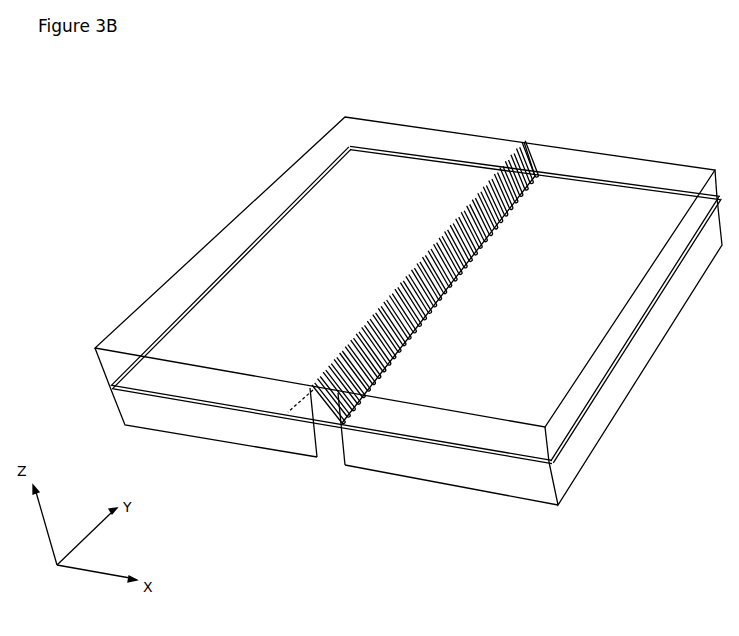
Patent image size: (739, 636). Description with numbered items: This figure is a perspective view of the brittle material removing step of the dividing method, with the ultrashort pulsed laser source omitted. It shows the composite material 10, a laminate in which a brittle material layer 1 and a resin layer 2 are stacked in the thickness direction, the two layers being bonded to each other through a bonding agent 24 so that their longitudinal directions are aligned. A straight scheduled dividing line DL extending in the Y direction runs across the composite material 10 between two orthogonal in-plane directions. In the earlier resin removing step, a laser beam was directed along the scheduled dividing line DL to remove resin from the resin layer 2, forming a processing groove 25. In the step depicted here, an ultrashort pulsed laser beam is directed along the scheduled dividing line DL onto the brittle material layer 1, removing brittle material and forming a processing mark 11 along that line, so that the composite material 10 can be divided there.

The composite material 10 is at (165, 205).
The brittle material layer 1 is at (593, 373).
The resin layer 2 is at (600, 406).
The bonding agent 24 is at (572, 438).
The processing mark 11 is at (325, 371).
The processing groove 25 is at (330, 465).
The scheduled dividing line DL is at (530, 136).